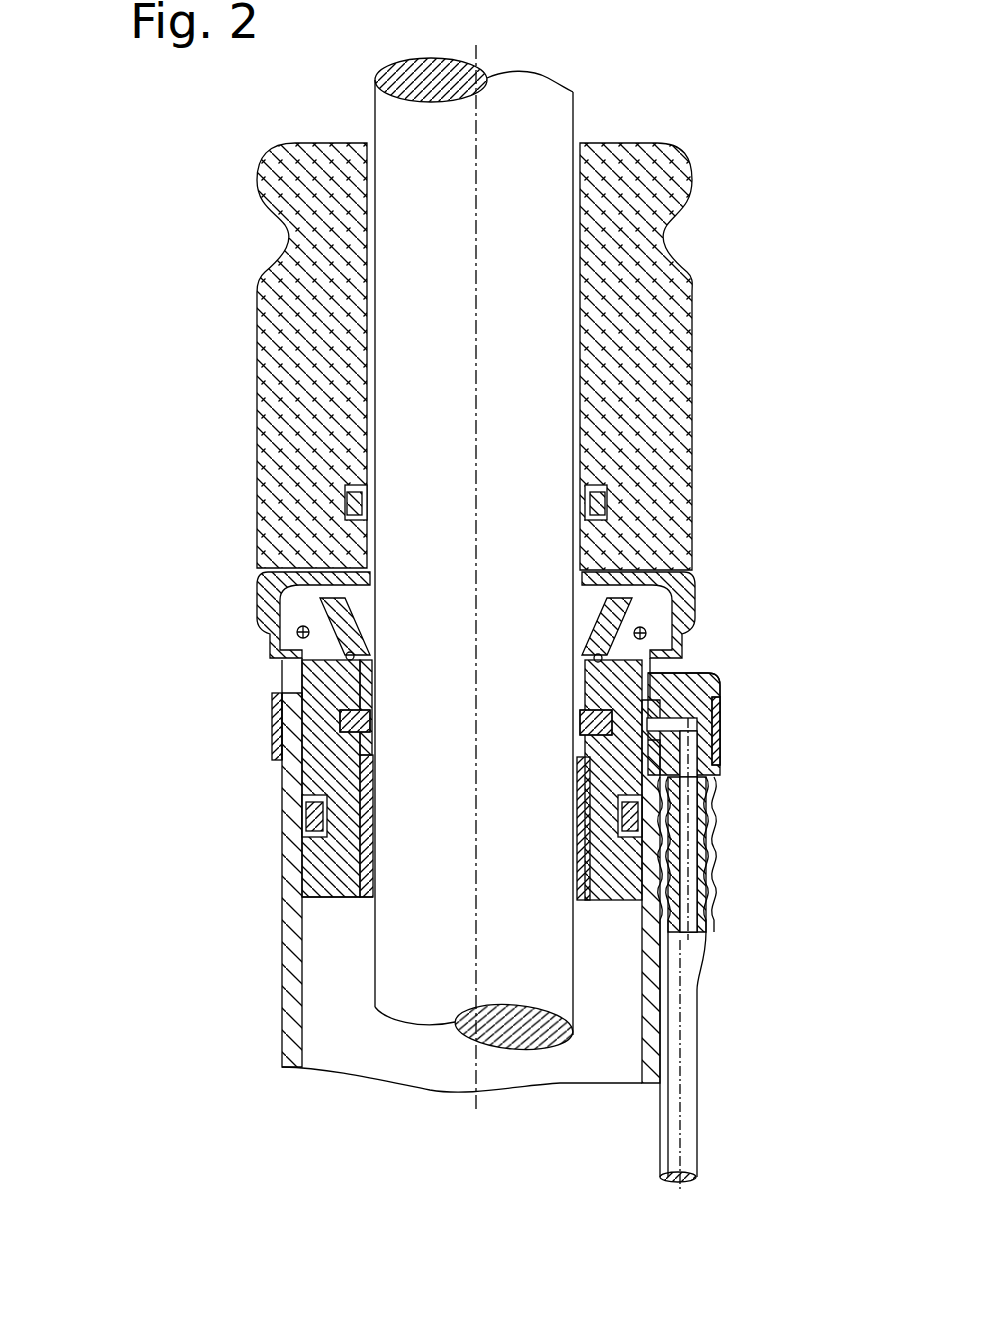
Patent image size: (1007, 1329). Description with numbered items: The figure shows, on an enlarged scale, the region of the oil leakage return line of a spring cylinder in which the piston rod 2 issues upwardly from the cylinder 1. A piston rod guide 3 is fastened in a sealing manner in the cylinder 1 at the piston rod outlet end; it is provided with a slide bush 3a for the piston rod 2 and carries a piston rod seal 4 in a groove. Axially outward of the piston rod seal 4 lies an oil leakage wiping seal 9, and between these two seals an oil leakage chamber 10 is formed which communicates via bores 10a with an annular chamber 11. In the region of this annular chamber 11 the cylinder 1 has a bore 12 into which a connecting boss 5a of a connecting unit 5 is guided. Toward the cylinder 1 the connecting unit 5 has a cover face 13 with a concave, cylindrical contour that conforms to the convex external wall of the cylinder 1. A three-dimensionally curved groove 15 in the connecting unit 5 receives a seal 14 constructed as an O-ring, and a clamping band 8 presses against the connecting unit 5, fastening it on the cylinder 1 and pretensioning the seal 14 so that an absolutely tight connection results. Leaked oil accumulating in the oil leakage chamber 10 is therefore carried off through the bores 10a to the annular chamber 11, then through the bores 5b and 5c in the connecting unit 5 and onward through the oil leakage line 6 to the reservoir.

The cylinder 1 is at (293, 940).
The piston rod 2 is at (513, 282).
The piston rod guide 3 is at (617, 857).
The slide bush 3a is at (368, 898).
The piston rod seal 4 is at (278, 705).
The connecting unit 5 is at (700, 680).
The connecting boss 5a is at (697, 680).
The bore 5b is at (712, 718).
The bore 5c is at (690, 908).
The oil leakage line 6 is at (685, 1020).
The clamping band 8 is at (278, 727).
The oil leakage wiping seal 9 is at (262, 583).
The oil leakage chamber 10 is at (272, 652).
The bores 10a is at (290, 666).
The annular chamber 11 is at (290, 770).
The bore 12 is at (720, 776).
The cover face 13 is at (665, 668).
The seal 14 is at (718, 745).
The groove 15 is at (718, 700).